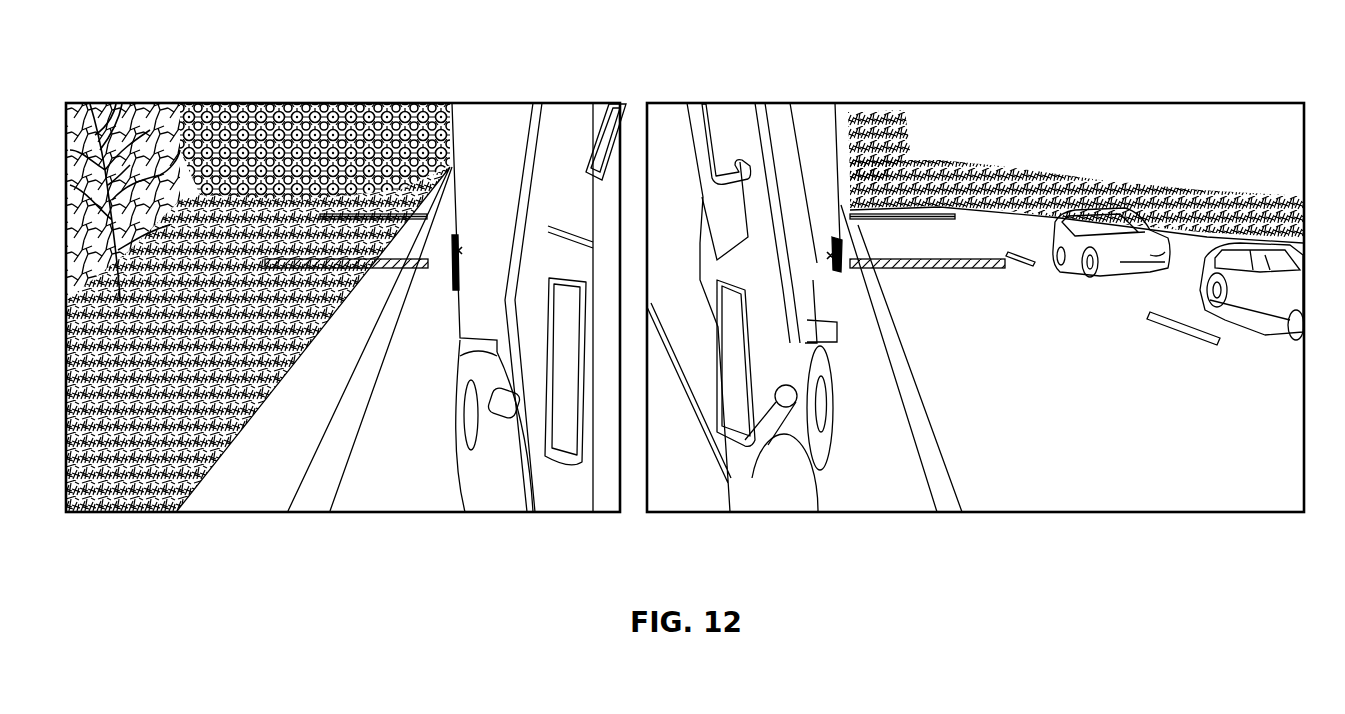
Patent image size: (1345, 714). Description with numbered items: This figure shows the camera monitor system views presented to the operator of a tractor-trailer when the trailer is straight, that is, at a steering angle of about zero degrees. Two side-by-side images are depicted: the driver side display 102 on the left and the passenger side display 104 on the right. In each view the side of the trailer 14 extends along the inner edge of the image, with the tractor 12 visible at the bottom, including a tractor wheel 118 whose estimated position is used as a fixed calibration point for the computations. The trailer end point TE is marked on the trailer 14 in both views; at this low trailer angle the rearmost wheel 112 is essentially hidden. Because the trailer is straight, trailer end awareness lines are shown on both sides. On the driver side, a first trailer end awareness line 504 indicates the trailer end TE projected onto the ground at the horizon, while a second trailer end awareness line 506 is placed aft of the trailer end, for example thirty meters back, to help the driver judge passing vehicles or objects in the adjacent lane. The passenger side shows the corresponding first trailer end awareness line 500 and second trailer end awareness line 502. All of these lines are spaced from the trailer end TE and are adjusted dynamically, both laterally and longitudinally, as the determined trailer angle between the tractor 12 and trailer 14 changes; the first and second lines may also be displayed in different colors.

The tractor 12 is at (500, 478).
The trailer 14 is at (506, 115).
The driver side display 102 is at (284, 78).
The passenger side display 104 is at (1104, 88).
The rearmost wheel 112 is at (452, 262).
The tractor wheel 118 is at (445, 398).
The first trailer end awareness line 500 is at (1006, 276).
The second trailer end awareness line 502 is at (917, 208).
The first trailer end awareness line 504 is at (352, 277).
The second trailer end awareness line 506 is at (399, 210).
The trailer end point TE is at (461, 250).